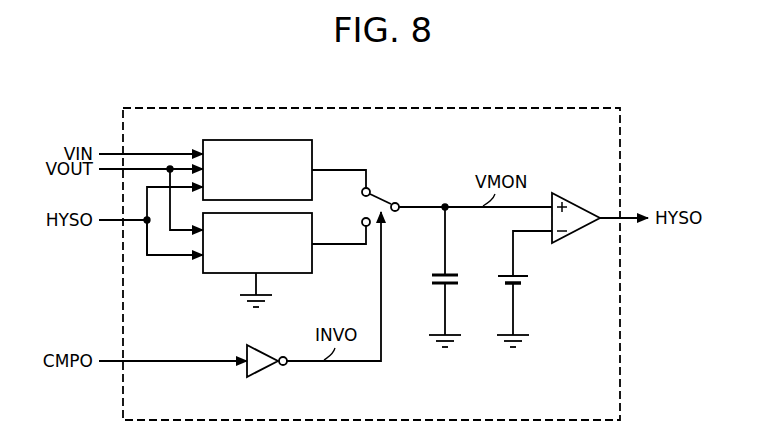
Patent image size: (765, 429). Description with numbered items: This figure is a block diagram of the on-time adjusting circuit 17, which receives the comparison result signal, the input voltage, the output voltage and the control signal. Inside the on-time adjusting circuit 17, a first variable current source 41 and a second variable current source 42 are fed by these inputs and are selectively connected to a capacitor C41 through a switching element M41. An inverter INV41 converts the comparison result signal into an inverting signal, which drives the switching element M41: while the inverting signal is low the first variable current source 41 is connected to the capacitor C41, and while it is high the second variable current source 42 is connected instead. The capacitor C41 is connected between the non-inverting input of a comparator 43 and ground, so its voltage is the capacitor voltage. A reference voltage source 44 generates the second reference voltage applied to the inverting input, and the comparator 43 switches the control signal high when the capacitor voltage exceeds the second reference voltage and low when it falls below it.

The on-time adjusting circuit 17 is at (570, 108).
The first variable current source 41 is at (312, 147).
The second variable current source 42 is at (312, 220).
The switching element M41 is at (432, 207).
The comparator 43 is at (576, 205).
The reference voltage source 44 is at (503, 276).
The capacitor C41 is at (432, 285).
The inverter INV41 is at (263, 369).